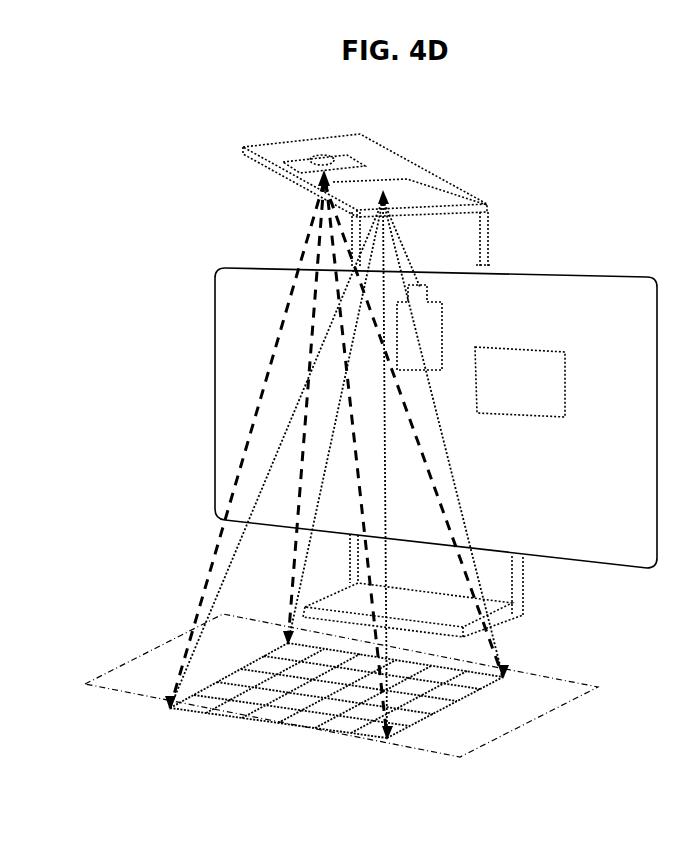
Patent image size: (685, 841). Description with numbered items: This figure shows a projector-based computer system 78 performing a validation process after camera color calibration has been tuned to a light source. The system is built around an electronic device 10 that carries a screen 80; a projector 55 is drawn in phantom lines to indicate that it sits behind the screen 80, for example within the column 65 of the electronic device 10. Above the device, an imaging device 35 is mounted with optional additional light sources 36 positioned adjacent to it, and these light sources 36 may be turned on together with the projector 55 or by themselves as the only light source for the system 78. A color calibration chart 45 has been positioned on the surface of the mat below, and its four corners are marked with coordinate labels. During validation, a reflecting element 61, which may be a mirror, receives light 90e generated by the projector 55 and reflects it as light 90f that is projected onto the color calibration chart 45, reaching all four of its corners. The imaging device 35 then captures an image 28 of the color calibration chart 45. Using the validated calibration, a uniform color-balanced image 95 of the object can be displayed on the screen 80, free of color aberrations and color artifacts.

The electronic device 10 is at (487, 249).
The image of the color calibration chart 28 is at (300, 243).
The imaging device 35 is at (320, 165).
The additional light sources 36 is at (327, 157).
The color calibration chart 45 is at (300, 729).
The projector 55 is at (442, 322).
The reflecting element 61 is at (407, 180).
The column 65 is at (478, 265).
The projector-based computer system 78 is at (156, 219).
The screen 80 is at (607, 276).
The light 90e is at (410, 268).
The light 90f is at (215, 596).
The uniform color-balanced image 95 is at (543, 347).